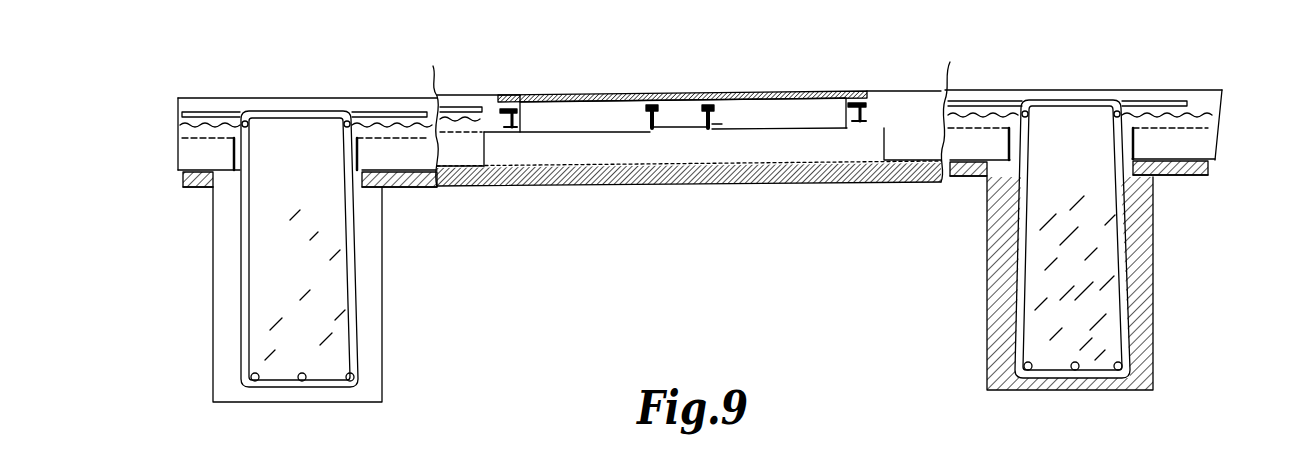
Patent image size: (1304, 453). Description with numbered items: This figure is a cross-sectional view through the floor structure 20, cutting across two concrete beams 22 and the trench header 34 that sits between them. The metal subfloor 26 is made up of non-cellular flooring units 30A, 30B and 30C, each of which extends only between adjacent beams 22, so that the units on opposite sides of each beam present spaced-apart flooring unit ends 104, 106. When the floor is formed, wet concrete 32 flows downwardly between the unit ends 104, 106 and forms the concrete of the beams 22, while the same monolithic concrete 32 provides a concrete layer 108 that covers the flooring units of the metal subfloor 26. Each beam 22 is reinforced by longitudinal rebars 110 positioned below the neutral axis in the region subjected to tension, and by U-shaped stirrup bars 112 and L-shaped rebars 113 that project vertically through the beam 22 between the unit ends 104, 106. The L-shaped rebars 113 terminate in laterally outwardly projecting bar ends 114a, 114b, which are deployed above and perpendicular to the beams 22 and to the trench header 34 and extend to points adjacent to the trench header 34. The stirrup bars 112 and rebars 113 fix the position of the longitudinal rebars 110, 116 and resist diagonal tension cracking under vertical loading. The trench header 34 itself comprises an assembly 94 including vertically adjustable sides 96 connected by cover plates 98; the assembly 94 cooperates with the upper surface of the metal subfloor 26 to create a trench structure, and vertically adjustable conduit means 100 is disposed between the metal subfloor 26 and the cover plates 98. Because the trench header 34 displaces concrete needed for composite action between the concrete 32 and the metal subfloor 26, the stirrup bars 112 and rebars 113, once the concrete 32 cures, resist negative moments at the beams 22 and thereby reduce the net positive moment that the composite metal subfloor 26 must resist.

The floor structure 20 is at (1226, 82).
The beam 22 is at (383, 317).
The metal subfloor 26 is at (553, 130).
The flooring unit 30A is at (184, 177).
The flooring unit 30B is at (477, 187).
The flooring unit 30C is at (1215, 160).
The concrete 32 is at (263, 342).
The trench header 34 is at (682, 92).
The assembly 94 is at (600, 95).
The vertically adjustable sides 96 is at (500, 106).
The cover plates 98 is at (807, 93).
The vertically adjustable conduit means 100 is at (715, 119).
The flooring unit end 104 is at (237, 182).
The flooring unit end 106 is at (361, 178).
The concrete layer 108 is at (304, 98).
The longitudinal rebars 110 is at (258, 381).
The stirrup bars 112 is at (356, 352).
The L-shaped rebars 113 is at (247, 271).
The bar end 114a is at (212, 114).
The bar end 114b is at (413, 114).
The longitudinal rebars 116 is at (243, 117).